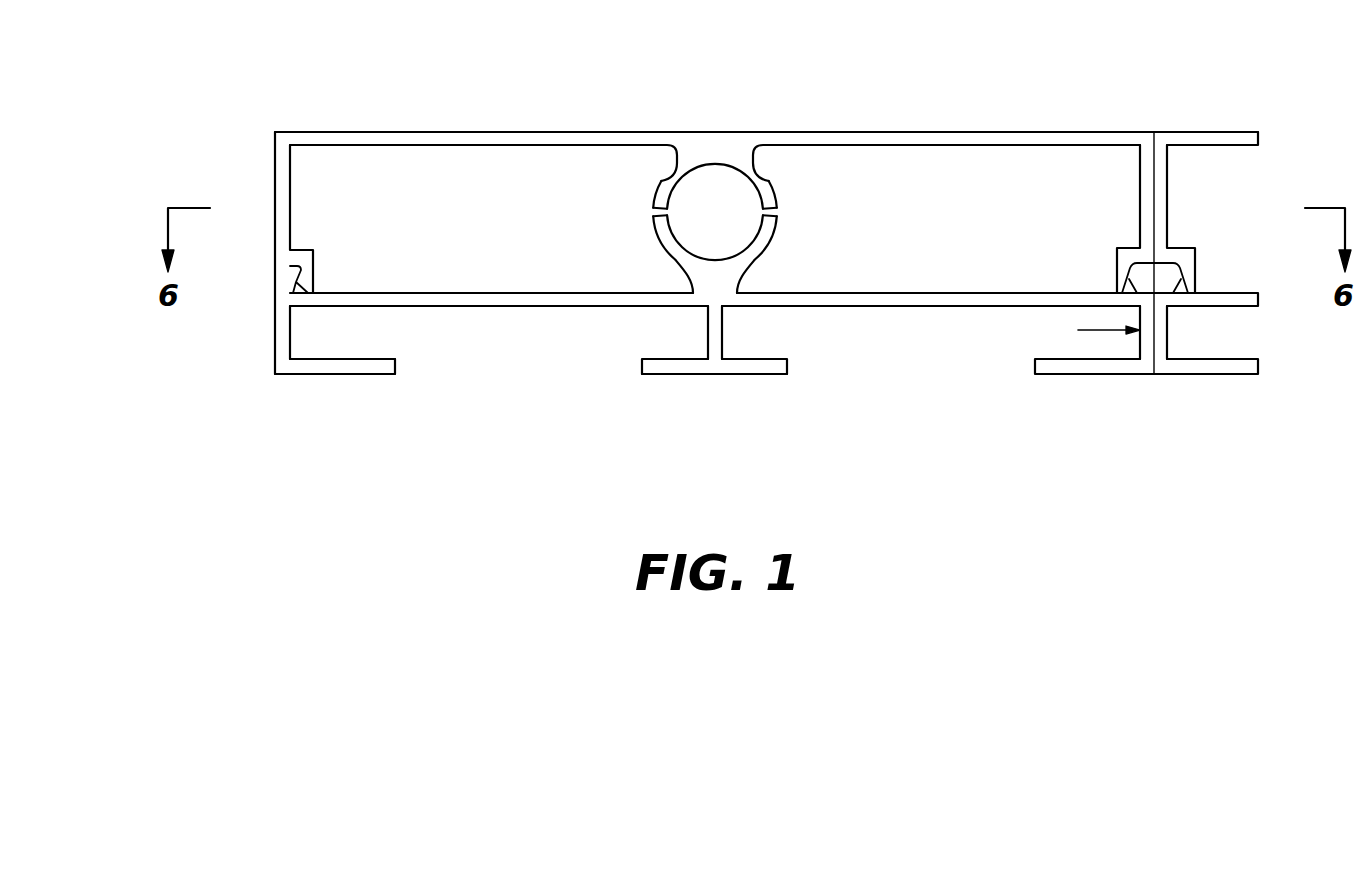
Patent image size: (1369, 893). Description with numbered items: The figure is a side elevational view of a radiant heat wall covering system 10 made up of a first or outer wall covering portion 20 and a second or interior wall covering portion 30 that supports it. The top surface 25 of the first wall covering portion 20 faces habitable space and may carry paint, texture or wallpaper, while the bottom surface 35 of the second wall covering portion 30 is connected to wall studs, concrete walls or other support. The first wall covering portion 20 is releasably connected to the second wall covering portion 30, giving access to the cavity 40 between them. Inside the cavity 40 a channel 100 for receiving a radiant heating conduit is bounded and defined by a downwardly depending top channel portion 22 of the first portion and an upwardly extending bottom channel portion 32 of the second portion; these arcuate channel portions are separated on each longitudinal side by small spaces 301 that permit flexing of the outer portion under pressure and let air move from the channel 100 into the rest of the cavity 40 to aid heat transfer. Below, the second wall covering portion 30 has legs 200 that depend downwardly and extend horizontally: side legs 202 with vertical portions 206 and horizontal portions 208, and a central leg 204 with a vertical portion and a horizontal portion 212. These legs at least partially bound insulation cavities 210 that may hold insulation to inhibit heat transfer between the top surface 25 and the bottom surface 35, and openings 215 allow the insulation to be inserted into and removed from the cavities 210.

The wall covering system 10 is at (128, 94).
The first wall covering portion 20 is at (497, 132).
The top surface 25 is at (913, 132).
The cavity 40 is at (364, 219).
The second wall covering portion 30 is at (497, 293).
The channel 100 is at (715, 212).
The top channel portion 22 is at (777, 195).
The slits in ring wall 301 is at (653, 210).
The bottom channel portion 32 is at (652, 227).
The legs 200 is at (275, 335).
The side legs 202 is at (275, 357).
The vertical portions 206 is at (292, 350).
The bottom surface 35 is at (318, 376).
The horizontal portions 208 is at (335, 376).
The insulation cavity 210 is at (706, 347).
The openings 215 is at (507, 390).
The horizontal portion 212 is at (700, 376).
The central leg 204 is at (727, 376).